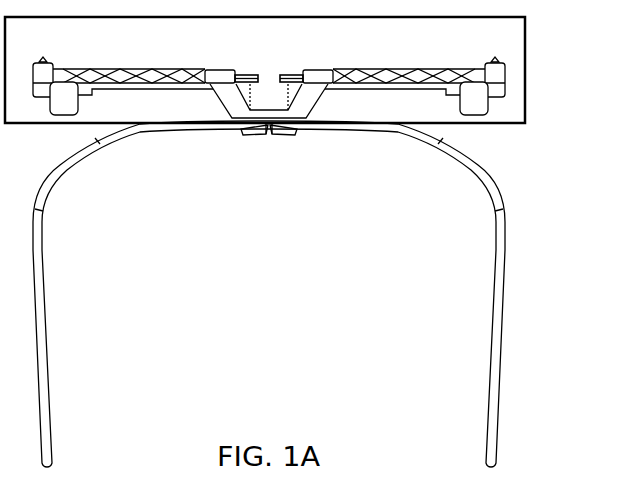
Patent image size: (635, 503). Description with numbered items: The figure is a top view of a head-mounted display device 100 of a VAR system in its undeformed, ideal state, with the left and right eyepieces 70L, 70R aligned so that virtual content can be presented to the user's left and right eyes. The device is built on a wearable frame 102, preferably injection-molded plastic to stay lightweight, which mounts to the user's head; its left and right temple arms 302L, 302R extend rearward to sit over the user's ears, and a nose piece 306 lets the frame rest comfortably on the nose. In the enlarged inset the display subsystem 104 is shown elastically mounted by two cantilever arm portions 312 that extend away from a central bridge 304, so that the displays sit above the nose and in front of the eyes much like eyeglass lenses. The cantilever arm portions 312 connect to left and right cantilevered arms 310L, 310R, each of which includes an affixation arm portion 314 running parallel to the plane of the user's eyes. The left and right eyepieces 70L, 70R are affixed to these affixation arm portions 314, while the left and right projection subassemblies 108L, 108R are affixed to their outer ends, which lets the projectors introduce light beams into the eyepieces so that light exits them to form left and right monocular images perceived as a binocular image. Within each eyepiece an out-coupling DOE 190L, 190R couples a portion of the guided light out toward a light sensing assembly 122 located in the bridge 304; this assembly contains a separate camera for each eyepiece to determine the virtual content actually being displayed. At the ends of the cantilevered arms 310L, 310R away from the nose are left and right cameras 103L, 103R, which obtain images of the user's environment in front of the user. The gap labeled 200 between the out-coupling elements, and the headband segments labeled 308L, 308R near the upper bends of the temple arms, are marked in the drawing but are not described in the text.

The head-mounted display device 100 is at (562, 56).
The display subsystem 104 is at (525, 70).
The wearable frame 102 is at (118, 141).
The left camera 103L is at (43, 56).
The right camera 103R is at (490, 56).
The left eyepiece 70L is at (115, 68).
The right eyepiece 70R is at (409, 68).
The left projection subassembly 108L is at (60, 114).
The right projection subassembly 108R is at (480, 114).
The left cantilevered arm 310L is at (207, 69).
The right cantilevered arm 310R is at (327, 69).
The out-coupling DOE 190L is at (250, 74).
The out-coupling DOE 190R is at (287, 74).
The gap distance 200 is at (286, 94).
The cantilever arm portion 312 is at (218, 100).
The affixation arm portion 314 is at (115, 91).
The bridge 304 is at (243, 132).
The nose piece 306 is at (255, 136).
The light sensing assembly 122 is at (272, 136).
The left headband segment 308L is at (60, 172).
The right headband segment 308R is at (478, 172).
The left temple arm 302L is at (44, 313).
The right temple arm 302R is at (493, 313).